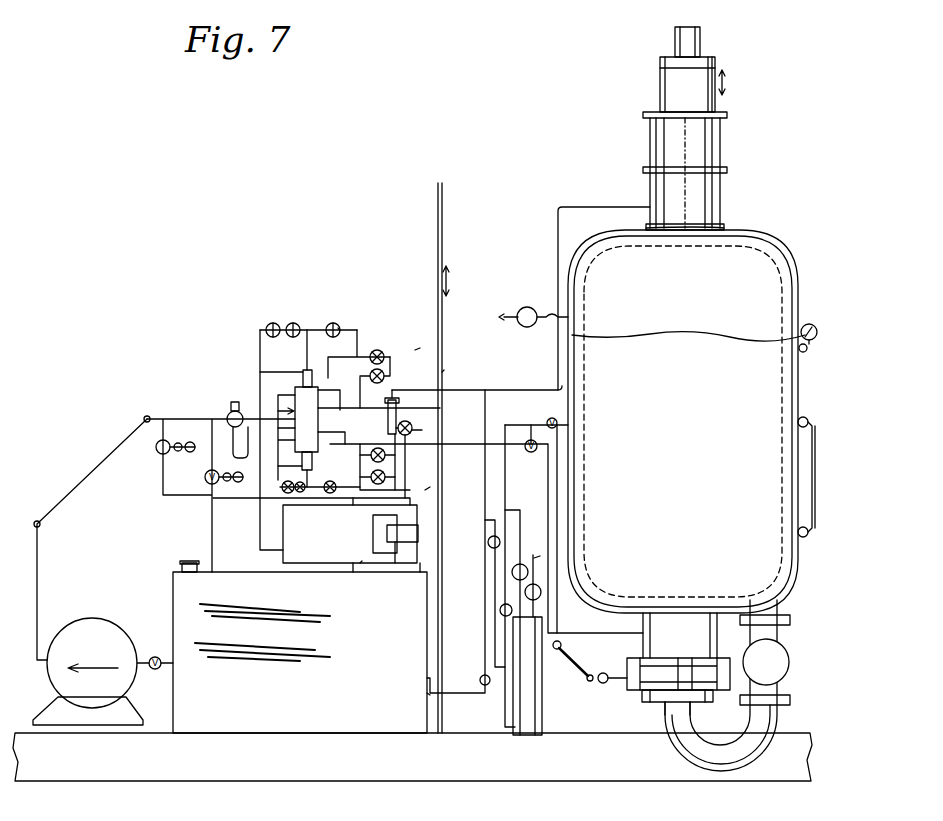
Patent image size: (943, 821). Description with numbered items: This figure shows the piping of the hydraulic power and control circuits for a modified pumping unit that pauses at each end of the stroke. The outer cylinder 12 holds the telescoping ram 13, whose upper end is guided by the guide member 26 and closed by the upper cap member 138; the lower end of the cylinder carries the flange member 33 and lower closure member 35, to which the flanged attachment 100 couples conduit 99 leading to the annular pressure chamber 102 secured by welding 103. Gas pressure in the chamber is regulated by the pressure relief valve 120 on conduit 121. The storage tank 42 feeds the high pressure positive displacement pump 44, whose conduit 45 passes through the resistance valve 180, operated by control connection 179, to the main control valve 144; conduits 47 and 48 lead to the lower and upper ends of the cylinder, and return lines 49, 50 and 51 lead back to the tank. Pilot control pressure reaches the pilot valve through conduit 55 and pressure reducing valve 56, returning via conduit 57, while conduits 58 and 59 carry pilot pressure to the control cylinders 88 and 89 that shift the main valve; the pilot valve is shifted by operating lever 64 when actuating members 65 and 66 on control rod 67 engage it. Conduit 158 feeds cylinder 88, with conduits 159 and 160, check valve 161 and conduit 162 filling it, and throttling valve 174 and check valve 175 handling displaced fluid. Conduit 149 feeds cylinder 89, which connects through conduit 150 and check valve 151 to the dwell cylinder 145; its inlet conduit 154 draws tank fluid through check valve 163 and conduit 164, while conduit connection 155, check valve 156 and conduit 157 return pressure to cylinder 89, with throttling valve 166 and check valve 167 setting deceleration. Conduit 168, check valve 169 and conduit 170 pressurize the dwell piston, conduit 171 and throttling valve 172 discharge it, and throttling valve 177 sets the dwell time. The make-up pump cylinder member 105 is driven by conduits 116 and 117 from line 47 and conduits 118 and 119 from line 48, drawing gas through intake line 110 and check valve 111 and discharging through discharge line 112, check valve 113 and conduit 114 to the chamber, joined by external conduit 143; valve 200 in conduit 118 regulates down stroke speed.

The upper cap member 138 is at (675, 33).
The ram 13 is at (660, 92).
The guide member 26 is at (720, 146).
The outer cylinder 12 is at (712, 190).
The welding 103 is at (724, 229).
The annular pressure chamber 102 is at (716, 317).
The conduit 121 is at (548, 312).
The pressure relief valve 120 is at (522, 322).
The conduit 48 is at (512, 388).
The conduit 118 is at (489, 400).
The actuating member 66 is at (480, 683).
The valve 200 is at (482, 700).
The conduit 47 is at (452, 446).
The conduit 116 is at (550, 455).
The conduit 119 is at (492, 658).
The conduit 117 is at (503, 635).
The conduit 114 is at (540, 508).
The discharge line 112 is at (520, 592).
The check valve 113 is at (533, 556).
The check valve 111 is at (548, 598).
The intake line 110 is at (540, 556).
The cylinder member 105 is at (545, 700).
The control rod 67 is at (444, 310).
The throttling valve 177 is at (420, 348).
The dwell cylinder 145 is at (444, 370).
The check valve 163 is at (422, 430).
The conduit 171 is at (430, 487).
The conduit 55 is at (420, 520).
The operating lever 64 is at (422, 546).
The flange member 33 is at (652, 666).
The lower closure member 35 is at (684, 672).
The external conduit 143 is at (582, 660).
The flanged attachment 100 is at (700, 706).
The conduit 99 is at (758, 760).
The conduit 45 is at (106, 450).
The high pressure positive displacement pump 44 is at (92, 626).
The storage tank 42 is at (172, 596).
The pressure reducing valve 56 is at (158, 460).
The resistance valve 180 is at (230, 412).
The control connection 179 is at (248, 456).
The main control valve 144 is at (285, 408).
The return line 49 is at (290, 400).
The conduit 158 is at (280, 372).
The return line 51 is at (260, 544).
The cylinder 88 is at (306, 378).
The cylinder 89 is at (306, 437).
The return line 50 is at (285, 434).
The conduit 149 is at (286, 458).
The conduit 150 is at (334, 445).
The check valve 175 is at (270, 324).
The throttling valve 174 is at (292, 322).
The conduit 159 is at (310, 322).
The conduit 160 is at (340, 328).
The check valve 161 is at (338, 324).
The conduit 168 is at (362, 350).
The conduit 162 is at (384, 354).
The conduit 170 is at (386, 378).
The check valve 169 is at (337, 389).
The inlet conduit 154 is at (398, 408).
The conduit connection 155 is at (379, 449).
The check valve 156 is at (371, 455).
The check valve 151 is at (400, 462).
The conduit 164 is at (400, 484).
The throttling valve 172 is at (370, 480).
The check valve 167 is at (280, 488).
The throttling valve 166 is at (298, 492).
The conduit 157 is at (284, 508).
The conduit 59 is at (352, 520).
The conduit 58 is at (372, 520).
The conduit 57 is at (360, 566).
The actuating member 65 is at (420, 566).